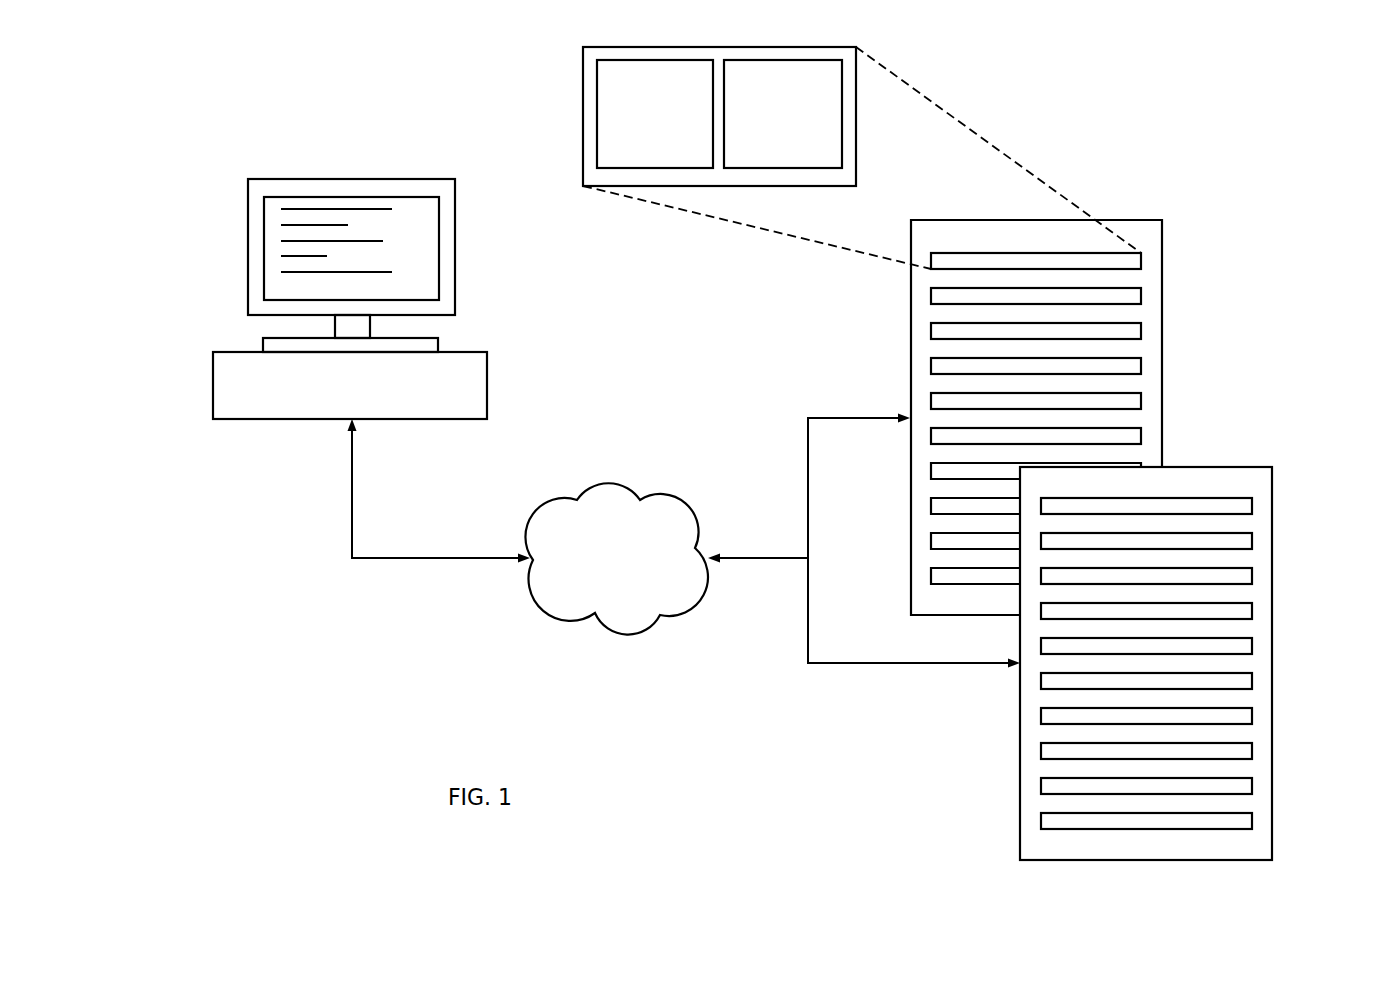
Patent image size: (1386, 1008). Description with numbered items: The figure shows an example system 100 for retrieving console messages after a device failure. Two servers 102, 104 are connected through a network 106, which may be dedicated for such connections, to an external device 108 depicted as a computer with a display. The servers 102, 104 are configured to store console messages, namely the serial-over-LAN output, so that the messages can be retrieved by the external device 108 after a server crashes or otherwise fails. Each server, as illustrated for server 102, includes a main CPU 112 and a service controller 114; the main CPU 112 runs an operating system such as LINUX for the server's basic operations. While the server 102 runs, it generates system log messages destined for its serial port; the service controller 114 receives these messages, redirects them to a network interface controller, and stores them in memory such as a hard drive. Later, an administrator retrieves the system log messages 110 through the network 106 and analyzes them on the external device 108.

The system 100 is at (1210, 148).
The server 102 is at (1162, 350).
The server 104 is at (1222, 467).
The network 106 is at (601, 582).
The external device 108 is at (334, 396).
The system log messages 110 is at (362, 209).
The main CPU 112 is at (639, 138).
The service controller 114 is at (767, 150).